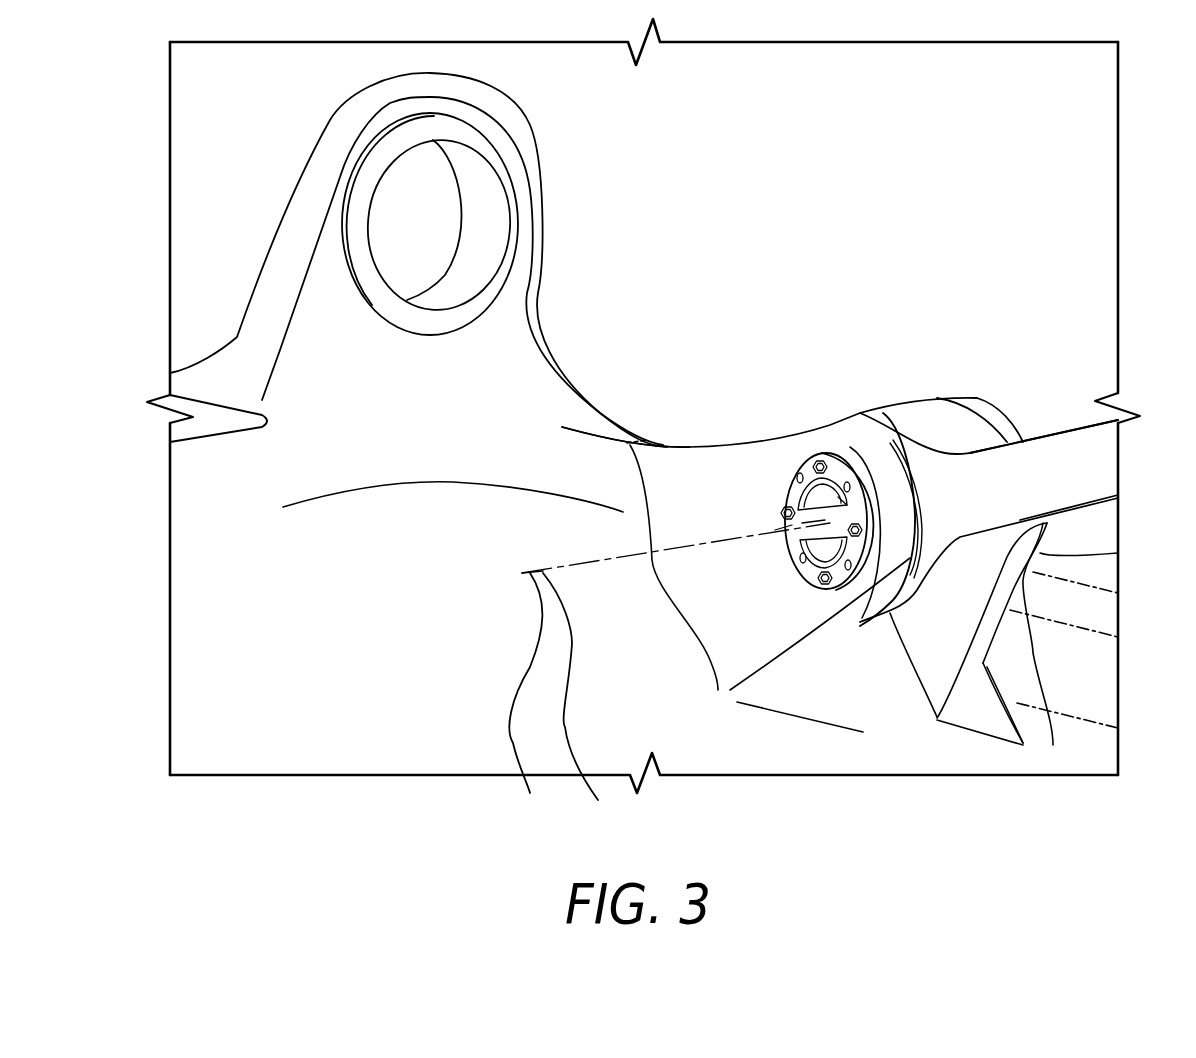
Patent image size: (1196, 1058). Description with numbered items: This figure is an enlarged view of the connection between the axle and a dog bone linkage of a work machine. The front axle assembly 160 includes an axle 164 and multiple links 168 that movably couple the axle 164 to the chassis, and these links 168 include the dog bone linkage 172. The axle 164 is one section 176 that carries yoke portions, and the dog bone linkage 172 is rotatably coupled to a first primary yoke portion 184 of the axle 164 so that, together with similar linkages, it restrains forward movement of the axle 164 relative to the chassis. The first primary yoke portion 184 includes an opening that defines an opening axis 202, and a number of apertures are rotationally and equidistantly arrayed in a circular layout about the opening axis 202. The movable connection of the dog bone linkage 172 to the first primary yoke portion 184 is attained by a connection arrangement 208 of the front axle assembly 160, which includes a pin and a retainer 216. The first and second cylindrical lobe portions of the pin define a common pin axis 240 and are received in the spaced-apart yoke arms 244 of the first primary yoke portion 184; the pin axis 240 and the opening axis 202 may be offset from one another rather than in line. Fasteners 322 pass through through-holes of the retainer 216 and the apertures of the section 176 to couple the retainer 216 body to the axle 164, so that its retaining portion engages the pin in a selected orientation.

The front axle assembly 160 is at (596, 396).
The axle 164 is at (623, 417).
The section 176 is at (626, 437).
The links 168 is at (1055, 432).
The dog bone linkage 172 is at (1073, 430).
The first primary yoke portion 184 is at (837, 440).
The opening axis 202 is at (531, 700).
The connection arrangement 208 is at (782, 565).
The retainer 216 is at (848, 455).
The pin axis 240 is at (580, 701).
The yoke arms 244 is at (880, 450).
The fasteners 322 is at (782, 512).